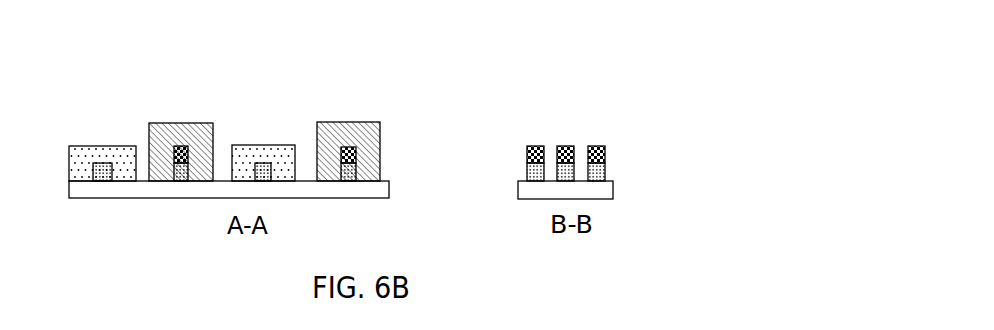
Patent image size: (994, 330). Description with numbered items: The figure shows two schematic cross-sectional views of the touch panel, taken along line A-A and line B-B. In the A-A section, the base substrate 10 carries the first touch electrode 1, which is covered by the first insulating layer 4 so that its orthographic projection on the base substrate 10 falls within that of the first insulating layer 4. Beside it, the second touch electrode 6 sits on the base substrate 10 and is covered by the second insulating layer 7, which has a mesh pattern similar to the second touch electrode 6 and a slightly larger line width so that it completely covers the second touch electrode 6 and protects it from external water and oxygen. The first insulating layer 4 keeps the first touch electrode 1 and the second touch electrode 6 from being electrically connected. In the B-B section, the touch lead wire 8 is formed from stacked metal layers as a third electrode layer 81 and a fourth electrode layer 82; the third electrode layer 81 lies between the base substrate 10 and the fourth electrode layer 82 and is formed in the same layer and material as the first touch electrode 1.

The first touch electrode 1 is at (103, 162).
The first insulating layer 4 is at (80, 162).
The second touch electrode 6 is at (371, 142).
The second insulating layer 7 is at (327, 133).
The touch lead wire 8 is at (613, 140).
The third electrode layer 81 is at (602, 168).
The fourth electrode layer 82 is at (600, 152).
The base substrate 10 is at (532, 193).